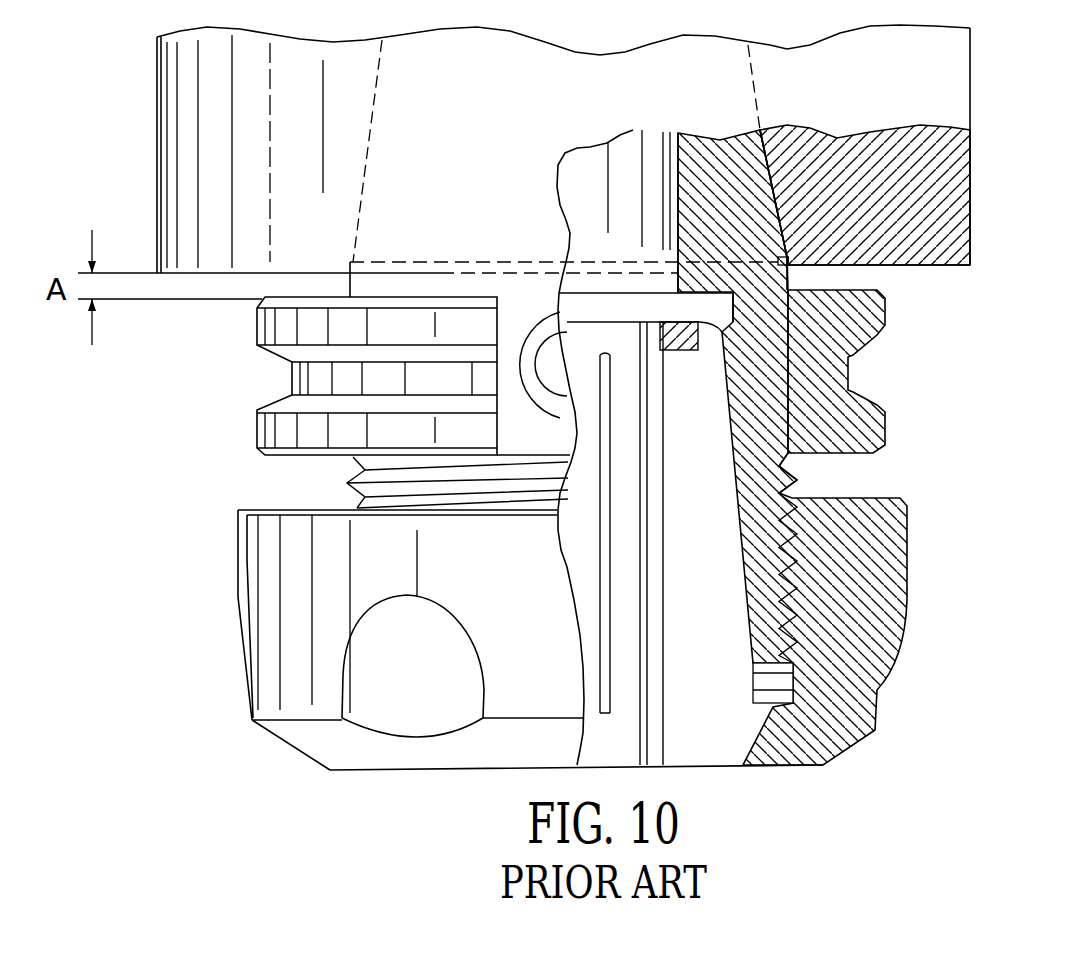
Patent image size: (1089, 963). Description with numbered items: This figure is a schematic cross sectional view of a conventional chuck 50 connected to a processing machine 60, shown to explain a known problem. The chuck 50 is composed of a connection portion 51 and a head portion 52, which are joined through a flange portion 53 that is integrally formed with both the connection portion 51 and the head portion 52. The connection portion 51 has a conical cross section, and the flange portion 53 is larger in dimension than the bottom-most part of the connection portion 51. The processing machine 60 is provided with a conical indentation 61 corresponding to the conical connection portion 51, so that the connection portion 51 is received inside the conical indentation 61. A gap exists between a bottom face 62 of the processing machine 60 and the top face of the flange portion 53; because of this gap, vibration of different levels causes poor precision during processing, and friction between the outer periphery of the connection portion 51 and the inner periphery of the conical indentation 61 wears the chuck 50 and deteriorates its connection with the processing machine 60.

The chuck 50 is at (953, 462).
The connection portion 51 is at (717, 148).
The head portion 52 is at (773, 540).
The flange portion 53 is at (862, 330).
The processing machine 60 is at (170, 146).
The conical indentation 61 is at (758, 165).
The bottom face 62 is at (942, 266).